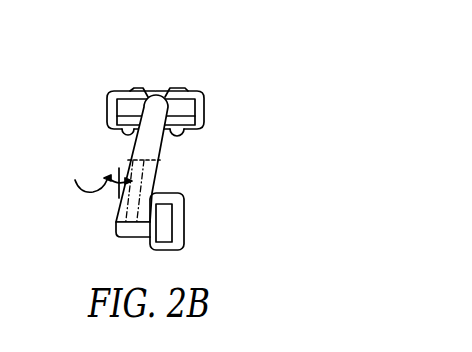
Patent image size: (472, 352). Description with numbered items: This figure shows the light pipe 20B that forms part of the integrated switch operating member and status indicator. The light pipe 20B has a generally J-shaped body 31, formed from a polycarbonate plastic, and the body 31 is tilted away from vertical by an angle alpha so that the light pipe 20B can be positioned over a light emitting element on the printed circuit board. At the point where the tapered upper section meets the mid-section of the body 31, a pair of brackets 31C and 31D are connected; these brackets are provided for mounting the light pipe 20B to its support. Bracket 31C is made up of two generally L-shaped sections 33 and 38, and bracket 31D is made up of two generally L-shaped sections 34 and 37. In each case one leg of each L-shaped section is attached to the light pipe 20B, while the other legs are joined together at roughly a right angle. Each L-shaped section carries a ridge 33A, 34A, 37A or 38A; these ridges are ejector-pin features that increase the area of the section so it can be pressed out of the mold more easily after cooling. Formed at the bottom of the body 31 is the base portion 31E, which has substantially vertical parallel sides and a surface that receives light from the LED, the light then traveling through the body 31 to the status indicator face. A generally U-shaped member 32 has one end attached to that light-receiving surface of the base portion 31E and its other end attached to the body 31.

The light pipe 20B is at (234, 21).
The bracket 31D is at (101, 81).
The bracket 31C is at (213, 80).
The ridge 37A is at (142, 88).
The ridge 38A is at (178, 88).
The L-shaped section 37 is at (107, 113).
The L-shaped section 38 is at (205, 92).
The L-shaped section 34 is at (108, 124).
The L-shaped section 33 is at (190, 124).
The ridge 34A is at (124, 131).
The ridge 33A is at (178, 136).
The body 31 is at (114, 222).
The base portion 31E is at (116, 232).
The U-shaped member 32 is at (184, 243).